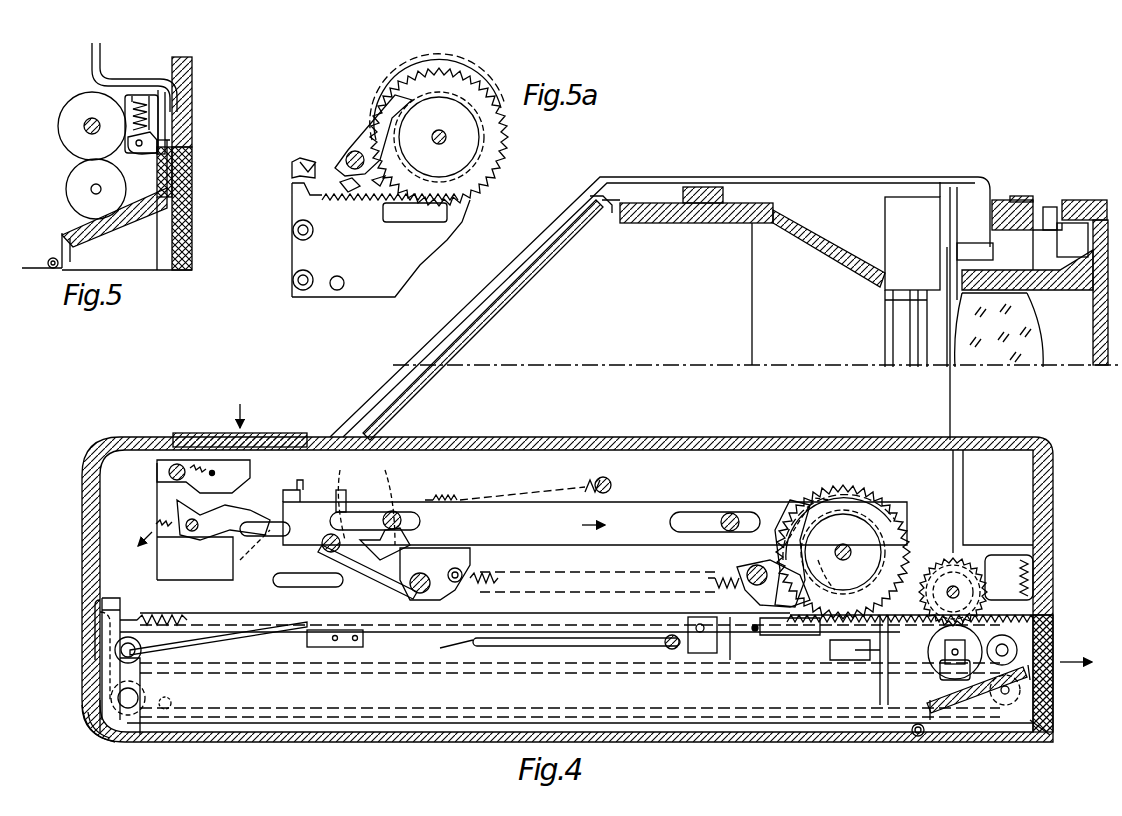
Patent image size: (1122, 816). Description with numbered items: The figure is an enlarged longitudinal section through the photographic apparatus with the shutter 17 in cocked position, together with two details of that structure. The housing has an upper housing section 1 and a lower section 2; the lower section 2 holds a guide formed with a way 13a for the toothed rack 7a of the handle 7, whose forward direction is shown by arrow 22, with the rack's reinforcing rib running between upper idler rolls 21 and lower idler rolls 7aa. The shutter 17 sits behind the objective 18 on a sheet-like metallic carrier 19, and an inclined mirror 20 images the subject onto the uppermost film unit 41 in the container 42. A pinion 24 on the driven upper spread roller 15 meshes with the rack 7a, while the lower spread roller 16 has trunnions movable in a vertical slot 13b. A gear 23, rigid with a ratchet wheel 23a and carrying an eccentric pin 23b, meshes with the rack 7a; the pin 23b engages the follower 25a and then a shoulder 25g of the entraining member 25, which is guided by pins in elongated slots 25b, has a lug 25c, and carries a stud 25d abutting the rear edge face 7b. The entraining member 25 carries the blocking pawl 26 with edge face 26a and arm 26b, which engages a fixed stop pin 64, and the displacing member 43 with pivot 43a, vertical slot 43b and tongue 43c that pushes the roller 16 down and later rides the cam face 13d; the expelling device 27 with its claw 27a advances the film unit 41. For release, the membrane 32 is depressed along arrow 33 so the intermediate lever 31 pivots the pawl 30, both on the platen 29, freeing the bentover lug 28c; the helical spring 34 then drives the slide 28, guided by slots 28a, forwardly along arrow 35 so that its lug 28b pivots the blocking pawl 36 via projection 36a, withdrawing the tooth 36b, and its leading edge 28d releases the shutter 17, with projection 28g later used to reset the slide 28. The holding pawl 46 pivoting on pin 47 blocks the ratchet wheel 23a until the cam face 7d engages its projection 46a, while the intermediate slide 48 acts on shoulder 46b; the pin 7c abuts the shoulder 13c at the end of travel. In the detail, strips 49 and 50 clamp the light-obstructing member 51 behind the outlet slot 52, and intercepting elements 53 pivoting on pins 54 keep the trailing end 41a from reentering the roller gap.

In FIG. 4, the housing section 1 is at (85, 490).
In FIG. 4, the lower section of the housing 2 is at (83, 700).
In FIG. 4, the handle 7 is at (1045, 735).
In FIG. 4, the toothed rack 7a is at (140, 615).
In FIG. 4, the lower idler rolls 7aa is at (86, 720).
In FIG. 5a, the rear edge face of the rack 7b is at (290, 190).
In FIG. 4, the rear edge face of the rack 7b is at (98, 600).
In FIG. 4, the pin of the rack 7c is at (172, 700).
In FIG. 5a, the cam face 7d is at (292, 235).
In FIG. 4, the cam face 7d is at (128, 606).
In FIG. 4, the way 13a is at (640, 730).
In FIG. 4, the slot of the guide 13b is at (975, 700).
In FIG. 4, the shoulder of the guide 13c is at (862, 700).
In FIG. 4, the cam face 13d is at (862, 559).
In FIG. 5, the driven upper spread roller 15 is at (80, 96).
In FIG. 4, the driven upper spread roller 15 is at (1033, 600).
In FIG. 5, the lower spread roller 16 is at (70, 202).
In FIG. 4, the lower spread roller 16 is at (940, 680).
In FIG. 4, the shutter 17 is at (882, 195).
In FIG. 4, the objective 18 is at (1035, 325).
In FIG. 4, the sheet-like metallic carrier 19 is at (956, 190).
In FIG. 4, the mirror 20 is at (548, 277).
In FIG. 4, the upper idler rolls 21 is at (1005, 706).
In FIG. 4, the arrow 22 is at (1089, 661).
In FIG. 5a, the rotary programming device 23 is at (439, 137).
In FIG. 4, the rotary programming device 23 is at (862, 505).
In FIG. 5a, the ratchet wheel 23a is at (435, 92).
In FIG. 4, the ratchet wheel 23a is at (832, 500).
In FIG. 4, the eccentric pin 23b is at (780, 520).
In FIG. 4, the pinion 24 is at (948, 558).
In FIG. 4, the entraining member 25 is at (490, 648).
In FIG. 4, the follower 25a is at (750, 568).
In FIG. 4, the elongated slots 25b is at (290, 587).
In FIG. 4, the lug of the entraining member 25c is at (362, 510).
In FIG. 4, the stud 25d is at (95, 620).
In FIG. 4, the shoulder 25g is at (831, 572).
In FIG. 4, the blocking pawl 26 is at (462, 552).
In FIG. 4, the edge face of the pawl 26a is at (385, 565).
In FIG. 4, the arm of the pawl 26b is at (472, 590).
In FIG. 4, the expelling device 27 is at (236, 640).
In FIG. 4, the claw 27a is at (115, 652).
In FIG. 4, the slide 28 is at (640, 500).
In FIG. 4, the elongated slots of the slide 28a is at (700, 512).
In FIG. 4, the lug 28b is at (298, 490).
In FIG. 4, the bentover lug 28c is at (268, 548).
In FIG. 4, the leading edge of the slide 28d is at (985, 552).
In FIG. 4, the projection of the slide 28g is at (412, 512).
In FIG. 4, the platen 29 is at (155, 560).
In FIG. 4, the pawl 30 is at (212, 540).
In FIG. 4, the intermediate lever 31 is at (158, 488).
In FIG. 4, the deformable membrane 32 is at (280, 433).
In FIG. 4, the arrow 33 is at (238, 404).
In FIG. 4, the helical spring 34 is at (530, 478).
In FIG. 4, the arrow 35 is at (609, 523).
In FIG. 4, the blocking pawl 36 is at (345, 570).
In FIG. 4, the projection of the blocking pawl 36a is at (341, 490).
In FIG. 4, the tooth of the blocking pawl 36b is at (388, 495).
In FIG. 4, the film unit 41 is at (400, 648).
In FIG. 4, the trailing end of the film unit 41a is at (140, 660).
In FIG. 5a, the container 42 is at (298, 160).
In FIG. 4, the container 42 is at (550, 576).
In FIG. 4, the displacing member 43 is at (735, 660).
In FIG. 4, the pivot of the displacing member 43a is at (790, 640).
In FIG. 4, the vertical slot of the displacing member 43b is at (700, 655).
In FIG. 4, the tongue 43c is at (862, 655).
In FIG. 5a, the holding pawl 46 is at (368, 115).
In FIG. 4, the holding pawl 46 is at (785, 500).
In FIG. 5a, the projection of the holding pawl 46a is at (352, 205).
In FIG. 5a, the shoulder of the holding pawl 46b is at (345, 165).
In FIG. 4, the pin 47 is at (715, 578).
In FIG. 5a, the intermediate slide 48 is at (428, 220).
In FIG. 4, the intermediate slide 48 is at (945, 680).
In FIG. 5, the strip 49 is at (136, 96).
In FIG. 4, the strip 49 is at (1033, 560).
In FIG. 5, the strip 50 is at (170, 93).
In FIG. 5, the light-obstructing member 51 is at (170, 124).
In FIG. 5, the outlet slot 52 is at (185, 165).
In FIG. 4, the outlet slot 52 is at (1053, 620).
In FIG. 5, the intercepting elements 53 is at (182, 150).
In FIG. 5, the pins 54 is at (128, 147).
In FIG. 4, the fixed stop pin 64 is at (440, 605).